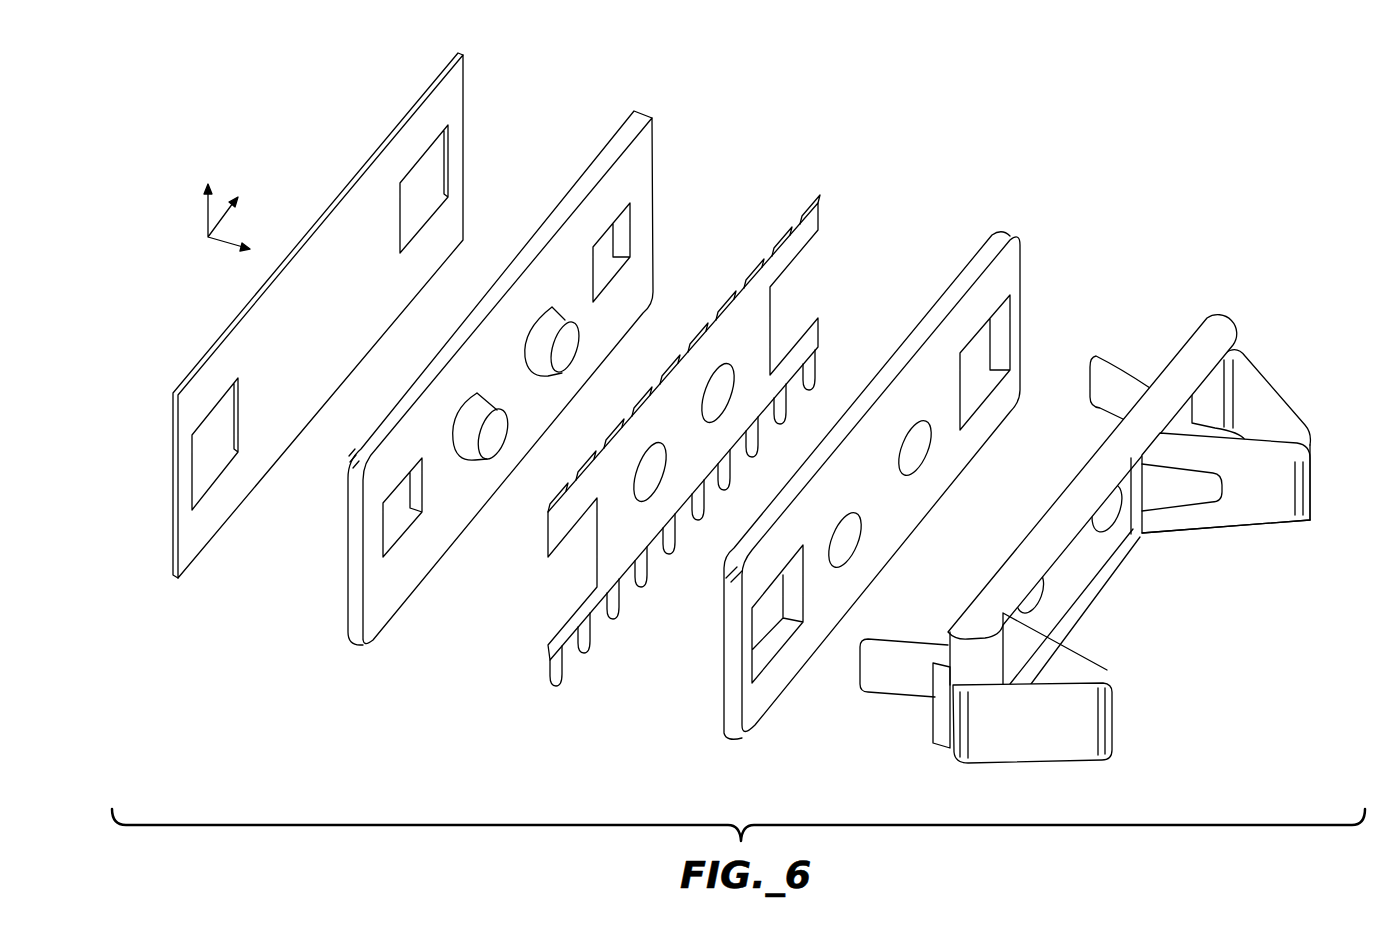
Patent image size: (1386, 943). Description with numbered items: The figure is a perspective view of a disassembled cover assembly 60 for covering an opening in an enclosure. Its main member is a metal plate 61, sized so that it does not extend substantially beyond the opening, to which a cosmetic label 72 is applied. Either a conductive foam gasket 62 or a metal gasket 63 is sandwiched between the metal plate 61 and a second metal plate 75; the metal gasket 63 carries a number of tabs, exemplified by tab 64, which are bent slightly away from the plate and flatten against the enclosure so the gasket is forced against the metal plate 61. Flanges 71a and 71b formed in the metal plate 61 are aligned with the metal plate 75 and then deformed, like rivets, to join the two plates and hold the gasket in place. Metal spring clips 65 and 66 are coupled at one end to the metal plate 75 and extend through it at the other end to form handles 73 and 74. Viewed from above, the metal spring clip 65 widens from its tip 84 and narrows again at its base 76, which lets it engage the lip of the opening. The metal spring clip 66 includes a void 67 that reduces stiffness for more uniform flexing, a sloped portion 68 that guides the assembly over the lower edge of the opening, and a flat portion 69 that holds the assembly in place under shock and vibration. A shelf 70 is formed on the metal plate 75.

The cover assembly 60 is at (297, 145).
The metal plate 61 is at (453, 399).
The conductive foam gasket 62 is at (728, 637).
The metal gasket 63 is at (718, 463).
The tab 64 is at (552, 673).
The metal spring clip 65 is at (996, 715).
The metal spring clip 66 is at (1154, 462).
The void 67 is at (1223, 480).
The sloped portion 68 is at (1310, 518).
The flat portion 69 is at (1157, 537).
The shelf 70 is at (1217, 330).
The flange 71a is at (452, 438).
The flange 71b is at (553, 303).
The cosmetic label 72 is at (177, 553).
The handle 73 is at (903, 697).
The handle 74 is at (1125, 387).
The metal plate 75 is at (1092, 462).
The base 76 is at (938, 742).
The tip 84 is at (1113, 753).